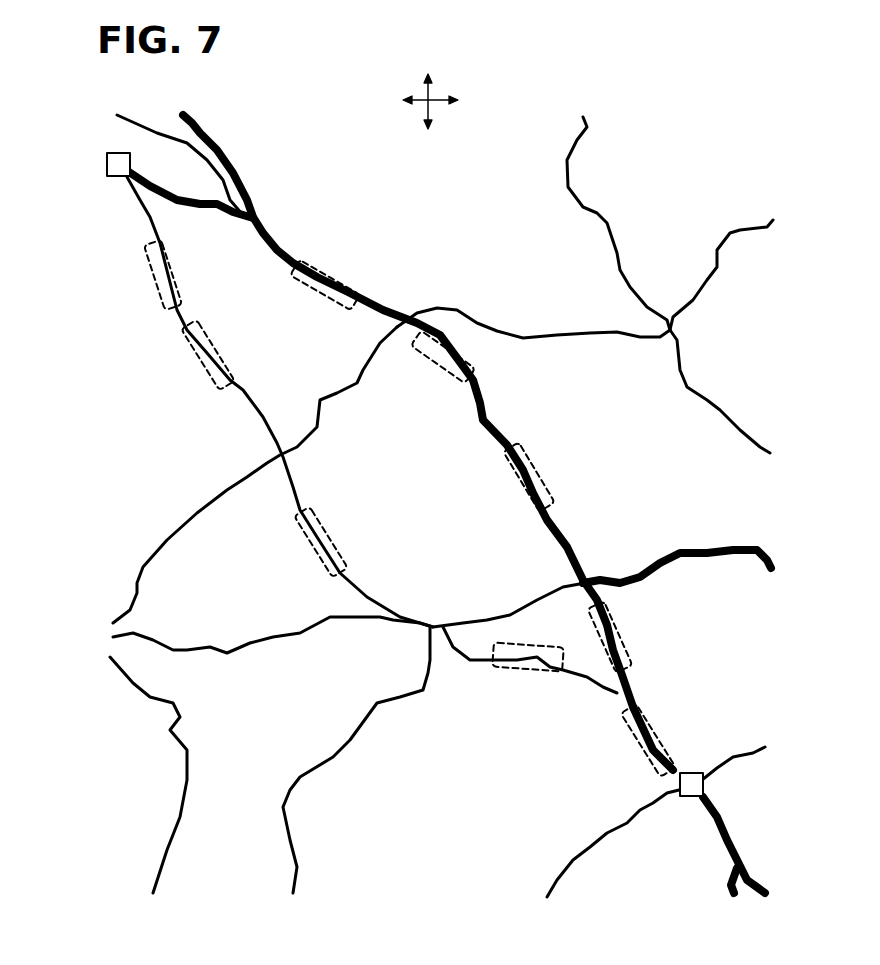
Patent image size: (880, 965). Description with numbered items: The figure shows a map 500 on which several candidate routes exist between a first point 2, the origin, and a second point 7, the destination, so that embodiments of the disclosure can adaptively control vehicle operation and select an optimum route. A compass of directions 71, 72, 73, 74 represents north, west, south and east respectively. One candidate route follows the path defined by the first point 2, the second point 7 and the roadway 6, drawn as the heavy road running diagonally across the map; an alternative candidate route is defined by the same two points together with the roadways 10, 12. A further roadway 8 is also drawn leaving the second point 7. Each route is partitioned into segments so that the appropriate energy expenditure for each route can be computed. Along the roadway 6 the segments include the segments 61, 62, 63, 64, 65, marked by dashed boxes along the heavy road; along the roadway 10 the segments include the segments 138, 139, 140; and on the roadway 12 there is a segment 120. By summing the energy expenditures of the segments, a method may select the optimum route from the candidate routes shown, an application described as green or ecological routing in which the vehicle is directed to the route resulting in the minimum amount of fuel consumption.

The map 500 is at (777, 88).
The first point 2 is at (107, 153).
The second point 7 is at (703, 792).
The roadway 6 is at (503, 447).
The roadway 8 is at (765, 747).
The roadway 10 is at (240, 393).
The roadway 12 is at (607, 693).
The segment 61 is at (343, 273).
The segment 62 is at (477, 364).
The segment 63 is at (548, 495).
The segment 64 is at (623, 629).
The segment 65 is at (668, 736).
The segment 120 is at (518, 670).
The segment 138 is at (145, 275).
The segment 139 is at (192, 358).
The segment 140 is at (303, 553).
The direction 71 is at (430, 87).
The direction 72 is at (415, 100).
The direction 73 is at (430, 136).
The direction 74 is at (465, 100).